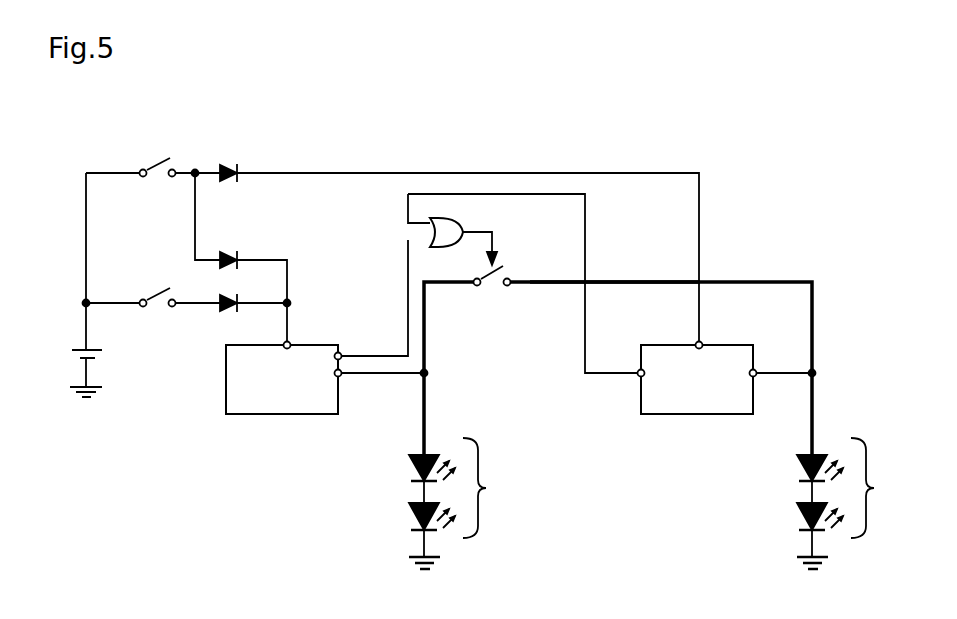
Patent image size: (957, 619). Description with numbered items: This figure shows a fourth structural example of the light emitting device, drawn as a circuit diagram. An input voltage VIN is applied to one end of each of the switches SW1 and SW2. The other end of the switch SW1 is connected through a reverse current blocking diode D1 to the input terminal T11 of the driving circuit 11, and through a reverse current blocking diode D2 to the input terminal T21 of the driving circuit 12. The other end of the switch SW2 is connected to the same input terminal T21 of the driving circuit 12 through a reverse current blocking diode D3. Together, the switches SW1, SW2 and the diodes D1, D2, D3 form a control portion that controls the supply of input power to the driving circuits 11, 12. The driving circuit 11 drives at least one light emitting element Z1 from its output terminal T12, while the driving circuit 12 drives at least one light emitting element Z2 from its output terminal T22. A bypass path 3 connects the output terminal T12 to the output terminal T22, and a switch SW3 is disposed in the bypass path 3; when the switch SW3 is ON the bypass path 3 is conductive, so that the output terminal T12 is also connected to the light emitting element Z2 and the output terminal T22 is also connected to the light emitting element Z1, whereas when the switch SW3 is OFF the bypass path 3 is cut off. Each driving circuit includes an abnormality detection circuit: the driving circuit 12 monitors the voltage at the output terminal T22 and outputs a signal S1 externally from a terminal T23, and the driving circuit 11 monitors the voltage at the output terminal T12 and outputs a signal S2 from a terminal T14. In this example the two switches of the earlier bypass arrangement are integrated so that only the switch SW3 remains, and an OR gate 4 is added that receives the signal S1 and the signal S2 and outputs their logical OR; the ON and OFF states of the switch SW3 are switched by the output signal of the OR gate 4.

The switch SW1 is at (156, 158).
The switch SW2 is at (154, 287).
The switch SW3 is at (492, 297).
The reverse current blocking diode D1 is at (233, 160).
The reverse current blocking diode D2 is at (233, 245).
The reverse current blocking diode D3 is at (233, 287).
The OR gate 4 is at (457, 218).
The bypass path 3 is at (737, 280).
The driving circuit 12 is at (323, 345).
The driving circuit 11 is at (737, 344).
The input terminal T21 is at (283, 341).
The output terminal T22 is at (341, 378).
The terminal T23 is at (342, 351).
The input terminal T11 is at (696, 341).
The output terminal T12 is at (756, 378).
The terminal T14 is at (640, 379).
The signal S1 is at (374, 345).
The signal S2 is at (613, 365).
The light emitting element Z1 is at (845, 503).
The light emitting element Z2 is at (457, 503).
The input voltage VIN is at (76, 362).